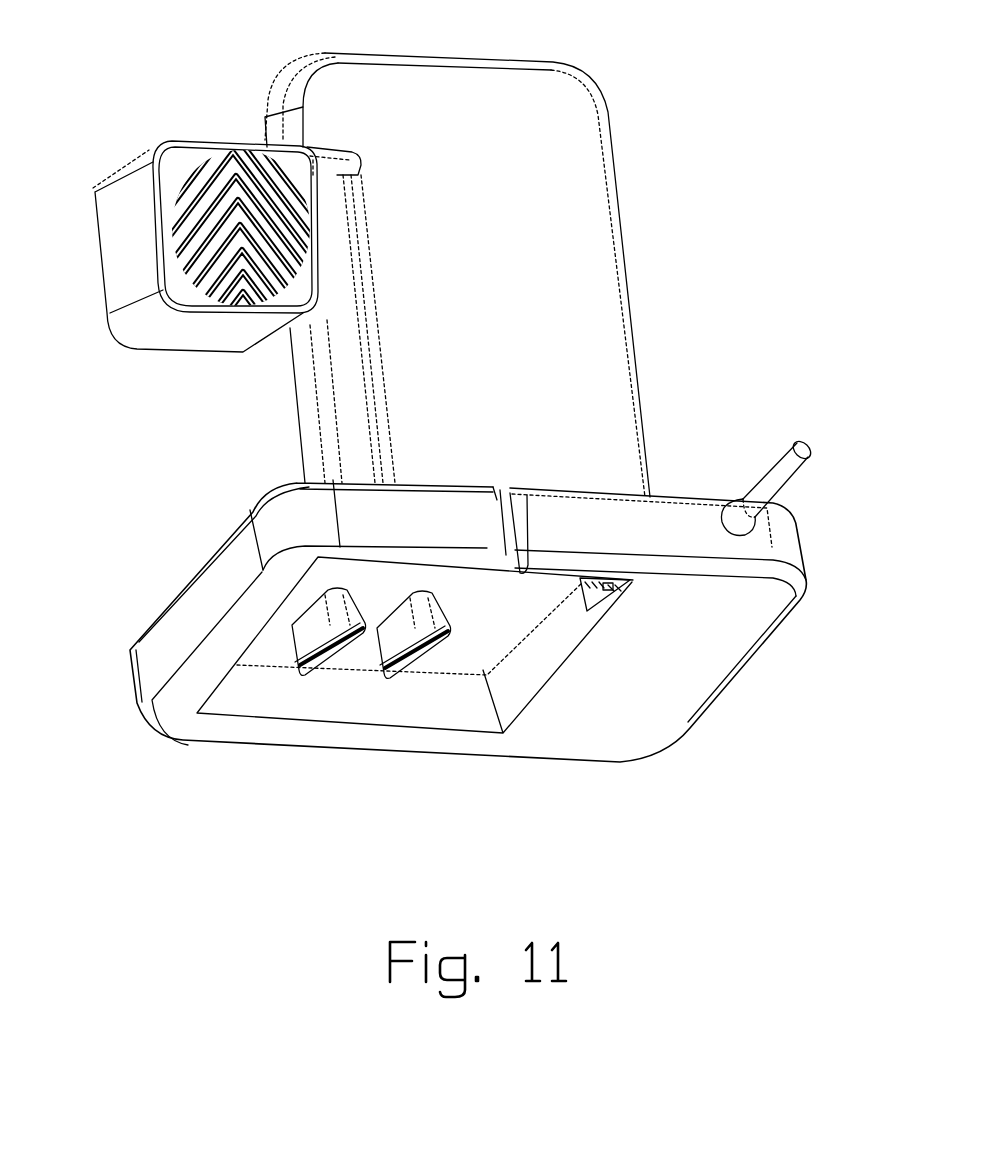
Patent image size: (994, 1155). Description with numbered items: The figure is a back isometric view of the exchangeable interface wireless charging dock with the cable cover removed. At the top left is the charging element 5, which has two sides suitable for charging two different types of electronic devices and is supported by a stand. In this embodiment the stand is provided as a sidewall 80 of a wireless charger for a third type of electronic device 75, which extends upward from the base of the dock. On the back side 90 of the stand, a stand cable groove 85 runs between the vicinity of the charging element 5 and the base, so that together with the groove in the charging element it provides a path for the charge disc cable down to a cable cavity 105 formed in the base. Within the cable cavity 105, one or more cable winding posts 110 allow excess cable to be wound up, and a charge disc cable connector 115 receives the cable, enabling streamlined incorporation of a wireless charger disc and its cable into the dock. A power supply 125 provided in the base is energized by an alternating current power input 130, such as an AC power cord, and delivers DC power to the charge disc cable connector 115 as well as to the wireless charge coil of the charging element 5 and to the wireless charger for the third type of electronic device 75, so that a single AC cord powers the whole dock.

The charging element 5 is at (177, 162).
The wireless charger for a third type of electronic device 75 is at (527, 135).
The sidewall 80 is at (275, 130).
The stand cable groove 85 is at (380, 380).
The back side 90 is at (507, 373).
The cable cavity 105 is at (280, 693).
The cable winding posts 110 is at (417, 657).
The charge disc cable connector 115 is at (593, 600).
The power supply 125 is at (650, 700).
The alternating current power input 130 is at (787, 467).